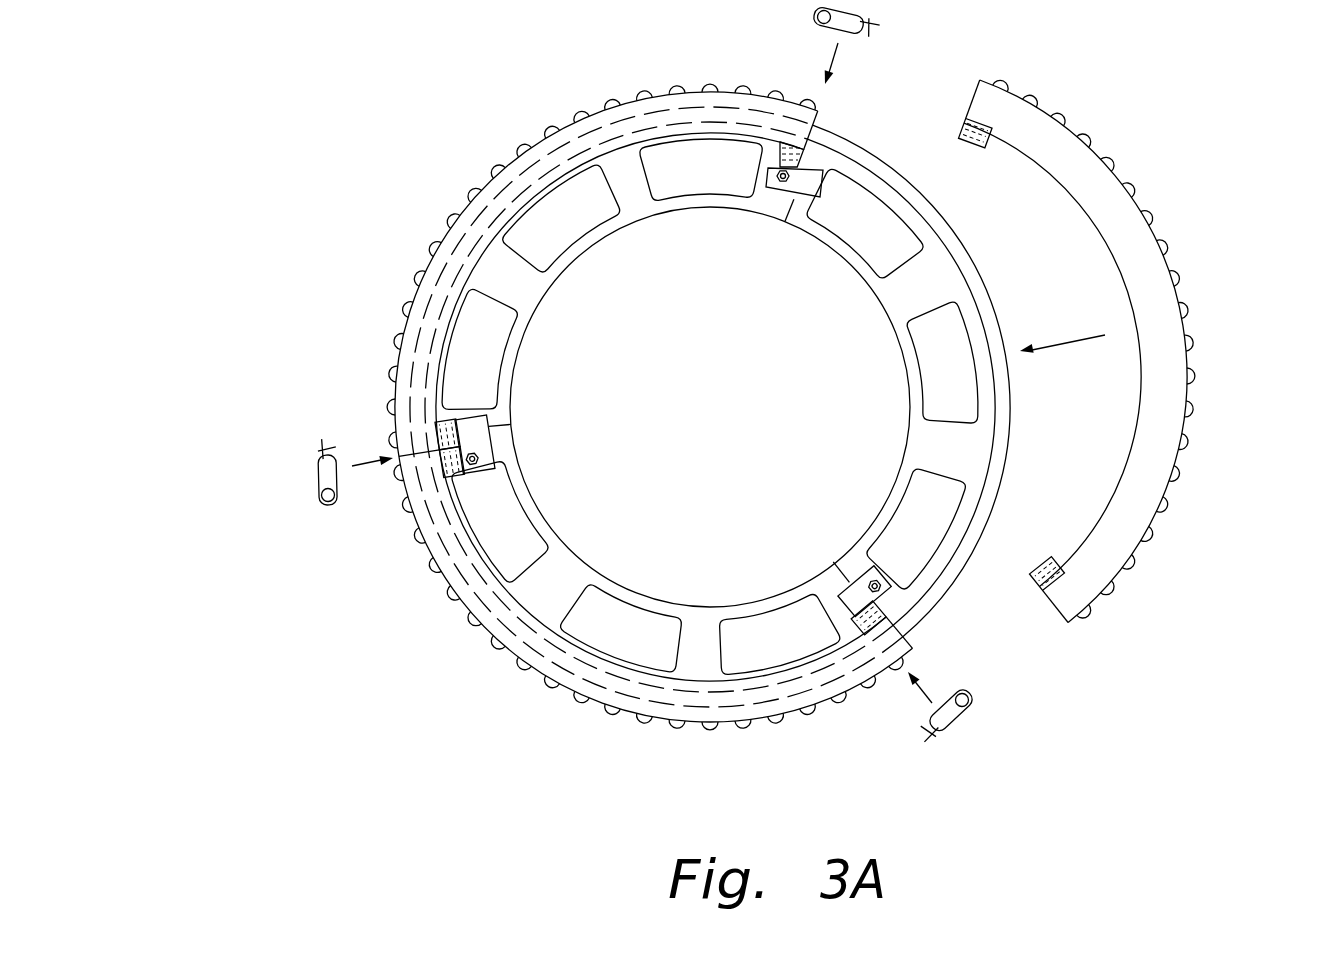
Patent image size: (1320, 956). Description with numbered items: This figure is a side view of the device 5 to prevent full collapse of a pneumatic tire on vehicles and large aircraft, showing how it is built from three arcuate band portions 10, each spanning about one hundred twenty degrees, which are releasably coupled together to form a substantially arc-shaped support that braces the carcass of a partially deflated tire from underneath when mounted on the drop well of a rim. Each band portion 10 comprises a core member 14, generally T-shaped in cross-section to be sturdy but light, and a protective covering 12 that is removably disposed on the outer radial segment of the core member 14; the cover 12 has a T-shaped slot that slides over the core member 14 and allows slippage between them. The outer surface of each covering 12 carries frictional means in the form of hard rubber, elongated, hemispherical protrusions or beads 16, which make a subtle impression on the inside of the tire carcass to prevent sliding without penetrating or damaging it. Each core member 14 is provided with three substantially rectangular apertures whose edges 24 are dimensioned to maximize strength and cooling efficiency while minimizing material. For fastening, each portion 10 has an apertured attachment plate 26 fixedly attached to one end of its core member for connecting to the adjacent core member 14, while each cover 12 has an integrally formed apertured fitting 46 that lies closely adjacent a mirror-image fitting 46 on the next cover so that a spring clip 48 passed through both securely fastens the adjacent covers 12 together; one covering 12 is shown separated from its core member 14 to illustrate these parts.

The device to prevent full collapse of a pneumatic tire 5 is at (283, 361).
The arcuate band portion 10 is at (411, 194).
The protective covering 12 is at (1145, 264).
The core member 14 is at (905, 299).
The beads 16 is at (1196, 406).
The aperture edges 24 is at (588, 603).
The apertured attachment plate 26 is at (478, 434).
The apertured fitting 46 is at (1047, 548).
The spring clip 48 is at (895, 20).